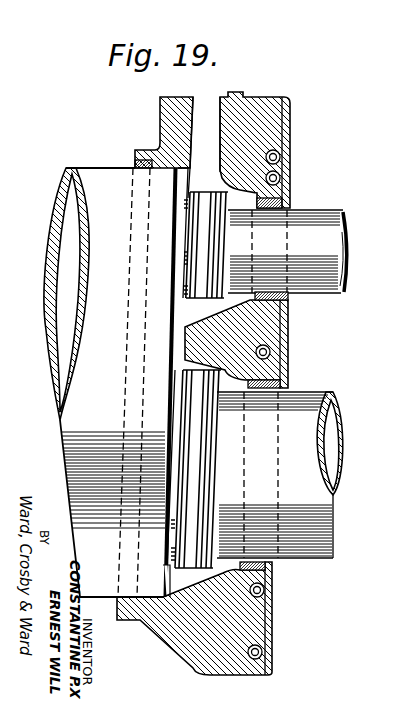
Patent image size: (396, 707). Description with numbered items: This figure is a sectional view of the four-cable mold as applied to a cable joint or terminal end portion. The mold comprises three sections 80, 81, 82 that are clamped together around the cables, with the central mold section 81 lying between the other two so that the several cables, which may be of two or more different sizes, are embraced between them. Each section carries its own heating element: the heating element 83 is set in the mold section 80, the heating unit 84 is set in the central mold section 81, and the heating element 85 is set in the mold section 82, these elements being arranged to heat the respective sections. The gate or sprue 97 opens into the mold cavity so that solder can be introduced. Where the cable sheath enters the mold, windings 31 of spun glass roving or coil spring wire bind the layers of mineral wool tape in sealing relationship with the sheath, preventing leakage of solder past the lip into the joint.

The gate or sprue 97 is at (209, 100).
The mold section 80 is at (266, 132).
The heating element 83 is at (289, 171).
The windings 31 is at (217, 243).
The mold section 81 is at (256, 327).
The heating element 84 is at (272, 352).
The mold section 82 is at (242, 620).
The heating element 85 is at (264, 652).